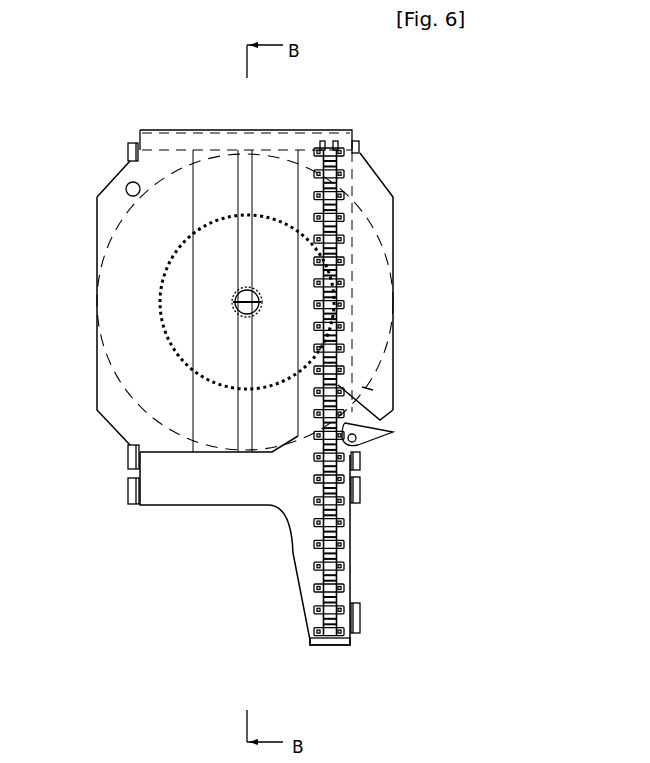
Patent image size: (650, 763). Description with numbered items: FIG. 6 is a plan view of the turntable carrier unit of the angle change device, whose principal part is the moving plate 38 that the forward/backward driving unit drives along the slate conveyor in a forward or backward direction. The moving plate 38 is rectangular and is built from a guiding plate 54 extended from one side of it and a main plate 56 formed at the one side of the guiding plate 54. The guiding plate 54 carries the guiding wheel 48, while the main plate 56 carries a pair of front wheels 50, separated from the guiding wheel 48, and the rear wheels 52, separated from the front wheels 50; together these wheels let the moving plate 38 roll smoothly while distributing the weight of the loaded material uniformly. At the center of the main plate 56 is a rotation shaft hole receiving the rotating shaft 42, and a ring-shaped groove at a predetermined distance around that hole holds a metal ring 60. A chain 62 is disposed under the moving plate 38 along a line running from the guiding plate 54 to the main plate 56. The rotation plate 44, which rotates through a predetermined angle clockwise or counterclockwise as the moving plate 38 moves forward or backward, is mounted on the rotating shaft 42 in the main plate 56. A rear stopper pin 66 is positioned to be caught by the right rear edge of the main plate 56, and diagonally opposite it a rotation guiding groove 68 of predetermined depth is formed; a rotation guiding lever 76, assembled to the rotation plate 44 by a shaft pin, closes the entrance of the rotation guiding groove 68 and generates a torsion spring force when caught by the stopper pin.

The moving plate 38 is at (227, 540).
The rotating shaft 42 is at (240, 302).
The rotation plate 44 is at (97, 235).
The guiding wheel 48 is at (362, 618).
The front wheels 50 is at (128, 490).
The rear wheels 52 is at (128, 147).
The guiding plate 54 is at (305, 560).
The main plate 56 is at (185, 505).
The metal ring 60 is at (182, 357).
The chain 62 is at (337, 647).
The rear stopper pin 66 is at (126, 189).
The rotation guiding groove 68 is at (372, 410).
The rotation guiding lever 76 is at (393, 432).